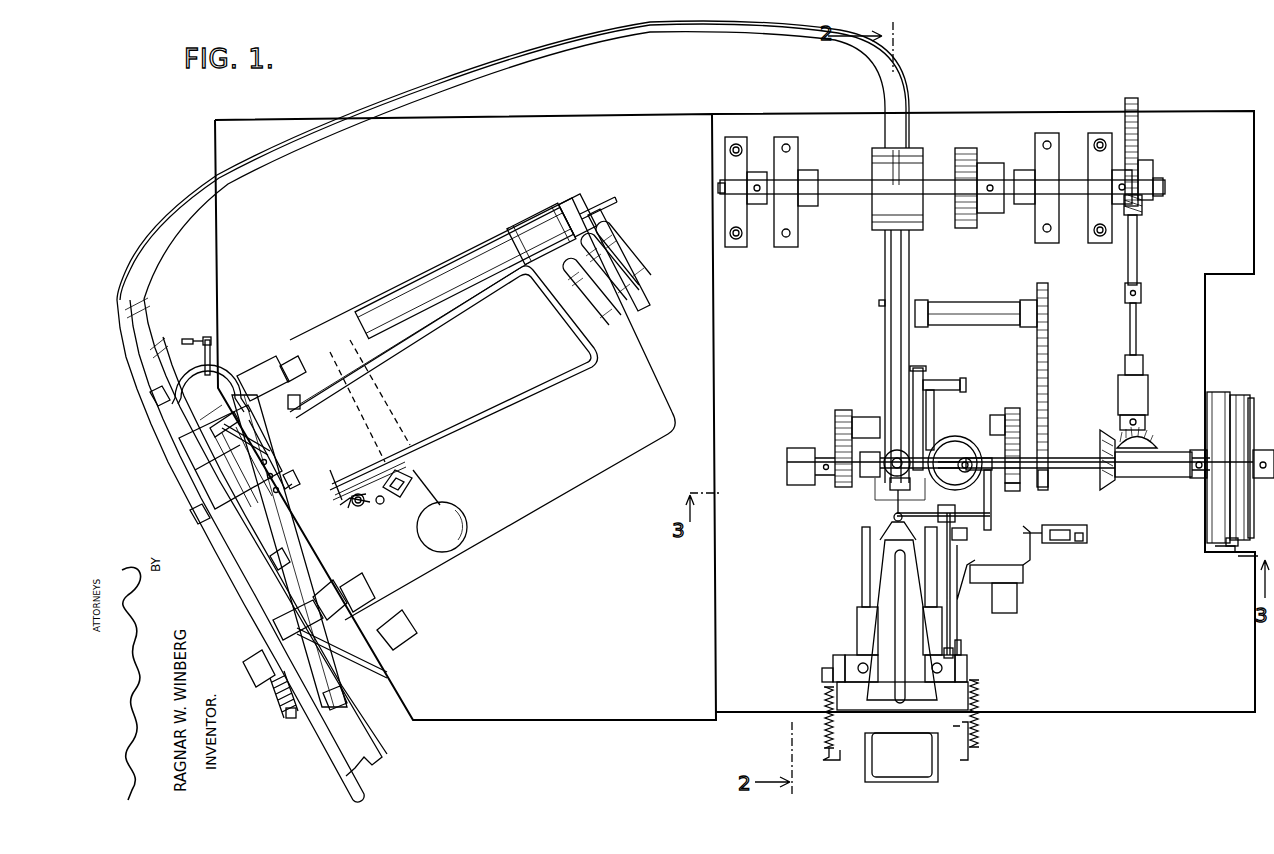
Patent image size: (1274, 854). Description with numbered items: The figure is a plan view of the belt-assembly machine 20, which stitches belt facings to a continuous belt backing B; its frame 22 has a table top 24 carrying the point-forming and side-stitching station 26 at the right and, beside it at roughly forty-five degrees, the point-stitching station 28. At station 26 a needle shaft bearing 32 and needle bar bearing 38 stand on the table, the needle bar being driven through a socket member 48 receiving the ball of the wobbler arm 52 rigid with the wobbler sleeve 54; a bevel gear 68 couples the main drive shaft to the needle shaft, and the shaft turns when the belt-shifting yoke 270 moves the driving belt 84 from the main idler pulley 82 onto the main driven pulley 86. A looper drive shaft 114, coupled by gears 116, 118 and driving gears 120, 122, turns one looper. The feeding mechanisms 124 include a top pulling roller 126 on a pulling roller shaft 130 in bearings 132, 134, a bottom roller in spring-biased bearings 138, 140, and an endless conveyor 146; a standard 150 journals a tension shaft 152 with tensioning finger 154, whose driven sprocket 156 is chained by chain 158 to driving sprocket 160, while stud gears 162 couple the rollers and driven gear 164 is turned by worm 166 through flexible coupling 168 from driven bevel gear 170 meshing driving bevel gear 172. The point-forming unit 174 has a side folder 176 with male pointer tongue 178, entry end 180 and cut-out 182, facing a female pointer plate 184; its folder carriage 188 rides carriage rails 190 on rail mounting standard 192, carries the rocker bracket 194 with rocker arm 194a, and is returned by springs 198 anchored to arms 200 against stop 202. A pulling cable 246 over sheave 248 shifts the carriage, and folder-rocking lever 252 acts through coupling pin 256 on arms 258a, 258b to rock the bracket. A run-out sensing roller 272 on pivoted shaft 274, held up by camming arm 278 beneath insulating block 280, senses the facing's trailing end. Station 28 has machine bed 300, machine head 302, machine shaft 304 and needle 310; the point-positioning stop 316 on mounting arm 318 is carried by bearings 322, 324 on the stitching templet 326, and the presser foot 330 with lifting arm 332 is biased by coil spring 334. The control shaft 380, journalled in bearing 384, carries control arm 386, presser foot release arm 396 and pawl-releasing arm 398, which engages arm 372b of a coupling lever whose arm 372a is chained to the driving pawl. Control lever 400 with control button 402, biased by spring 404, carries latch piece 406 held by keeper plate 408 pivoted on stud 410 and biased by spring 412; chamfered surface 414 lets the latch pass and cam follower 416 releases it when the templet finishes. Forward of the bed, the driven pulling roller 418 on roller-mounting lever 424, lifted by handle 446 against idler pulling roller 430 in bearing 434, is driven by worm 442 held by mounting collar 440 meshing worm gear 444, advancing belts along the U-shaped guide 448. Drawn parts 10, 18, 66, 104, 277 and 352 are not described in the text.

The tape dispensing machine 10 is at (662, 270).
The bearing block 18 is at (871, 464).
The belt-assembly machine 20 is at (1211, 96).
The support or frame 22 is at (1237, 108).
The table top 24 is at (1222, 708).
The point-forming and side-stitching station 26 is at (1114, 576).
The point-stitching station 28 is at (427, 695).
The needle shaft bearing 32 is at (948, 436).
The needle bar bearing 38 is at (885, 450).
The socket member 48 is at (1020, 463).
The wobbler arm 52 is at (906, 495).
The wobbler sleeve 54 is at (964, 456).
The drive shaft 66 is at (1185, 452).
The bevel gear 68 is at (950, 400).
The main idler pulley 82 is at (1238, 394).
The driving belt 84 is at (1250, 396).
The main driven pulley 86 is at (1212, 398).
The post 104 is at (925, 370).
The looper drive shaft 114 is at (984, 420).
The driving gear 116 is at (1012, 408).
The driving gear 118 is at (1014, 489).
The driven gear 120 is at (830, 425).
The driven gear 122 is at (842, 490).
The feeding or pulling mechanisms 124 is at (875, 291).
The top pulling roller 126 is at (878, 150).
The pulling roller shaft 130 is at (822, 180).
The bearing 132 is at (728, 172).
The bearing 134 is at (1095, 210).
The bearing 138 is at (782, 210).
The bearing 140 is at (1052, 160).
The endless conveyor 146 is at (885, 238).
The standard 150 is at (945, 302).
The tension shaft 152 is at (922, 300).
The tensioning finger 154 is at (878, 305).
The driven sprocket 156 is at (1028, 300).
The chain 158 is at (1049, 335).
The driving sprocket 160 is at (1048, 486).
The stud gears 162 is at (968, 150).
The driven gear 164 is at (1140, 140).
The worm 166 is at (1140, 210).
The flexible coupling 168 is at (1145, 282).
The driven bevel gear 170 is at (1140, 440).
The driving bevel gear 172 is at (1112, 485).
The point-forming and side-folding unit 174 is at (840, 630).
The side folder 176 is at (873, 760).
The male pointer tongue 178 is at (896, 545).
The entry end 180 is at (940, 773).
The elongated cut out 182 is at (895, 615).
The female pointer plate 184 is at (880, 500).
The folder carriage 188 is at (833, 662).
The carriage rails 190 is at (862, 585).
The rail mounting standard 192 is at (843, 706).
The rocker bracket 194 is at (830, 676).
The rocker arm 194a is at (952, 590).
The return biasing springs 198 is at (826, 732).
The arms 200 is at (819, 751).
The adjustable carriage-positioning stop 202 is at (980, 730).
The pulling cable 246 is at (962, 645).
The sheave 248 is at (968, 535).
The folder-rocking lever 252 is at (1066, 529).
The adjustable coupling pin 256 is at (1083, 538).
The arm of coupling lever 258a is at (1033, 570).
The arm of coupling lever 258b is at (1018, 593).
The belt-shifting yoke 270 is at (1225, 553).
The run-out sensing roller 272 is at (893, 525).
The pivoted shaft 274 is at (986, 518).
The bracket 277 is at (992, 500).
The camming arm 278 is at (952, 628).
The insulating block 280 is at (962, 504).
The machine bed 300 is at (662, 376).
The machine head 302 is at (588, 372).
The machine shaft 304 is at (645, 278).
The needle 310 is at (277, 493).
The point-positioning stop 316 is at (250, 592).
The mounting arm 318 is at (200, 520).
The bearing 322 is at (213, 462).
The bearing 324 is at (262, 437).
The stitching templet 326 is at (155, 398).
The point clamp or presser foot 330 is at (233, 488).
The lifting arm 332 is at (190, 403).
The coil spring 334 is at (238, 418).
The slide bar 352 is at (132, 342).
The arm of coupling lever 372a is at (208, 336).
The arm of coupling lever 372b is at (290, 400).
The control shaft 380 is at (428, 300).
The bearing 384 is at (530, 230).
The control arm 386 is at (597, 218).
The presser foot release arm 396 is at (222, 372).
The pawl-releasing arm 398 is at (262, 360).
The control lever 400 is at (450, 496).
The control button 402 is at (466, 524).
The spring 404 is at (370, 370).
The latch piece 406 is at (385, 470).
The keeper plate 408 is at (335, 492).
The upstanding stud 410 is at (360, 508).
The spring 412 is at (382, 506).
The chamfered surface 414 is at (425, 470).
The cam follower 416 is at (339, 489).
The driven pulling roller 418 is at (338, 703).
The roller-mounting lever 424 is at (243, 608).
The idler pulling roller 430 is at (380, 668).
The bearing 434 is at (380, 648).
The mounting collar 440 is at (258, 672).
The driving worm 442 is at (276, 705).
The worm gear 444 is at (292, 718).
The handle 446 is at (368, 797).
The U-shaped belt assembly guide 448 is at (335, 585).
The belt backing B is at (600, 40).